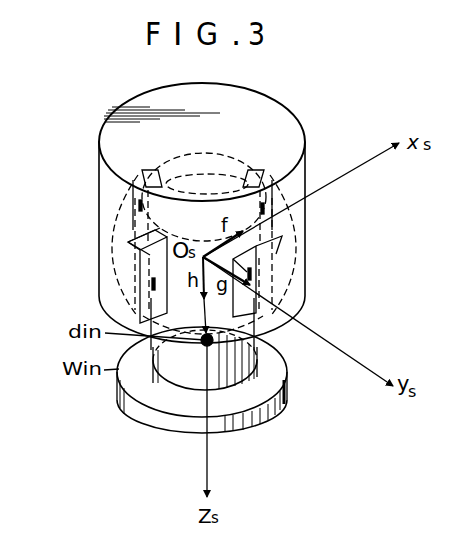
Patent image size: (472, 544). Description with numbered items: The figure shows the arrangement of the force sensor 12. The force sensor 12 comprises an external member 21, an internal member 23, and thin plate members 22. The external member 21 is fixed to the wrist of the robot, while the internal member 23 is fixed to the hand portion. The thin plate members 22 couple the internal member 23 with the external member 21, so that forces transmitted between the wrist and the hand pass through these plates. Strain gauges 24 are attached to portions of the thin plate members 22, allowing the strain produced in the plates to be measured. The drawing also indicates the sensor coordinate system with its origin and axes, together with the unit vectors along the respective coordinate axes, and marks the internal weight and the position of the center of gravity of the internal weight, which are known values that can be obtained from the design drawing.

The force sensor 12 is at (96, 188).
The external member 21 is at (300, 174).
The thin plate members 22 is at (275, 242).
The internal member 23 is at (253, 363).
The strain gauges 24 is at (252, 278).